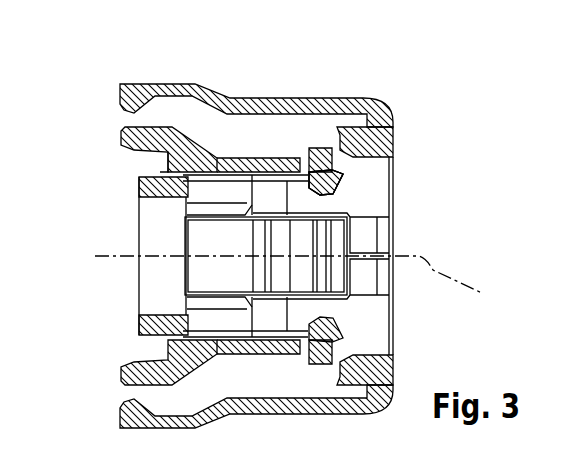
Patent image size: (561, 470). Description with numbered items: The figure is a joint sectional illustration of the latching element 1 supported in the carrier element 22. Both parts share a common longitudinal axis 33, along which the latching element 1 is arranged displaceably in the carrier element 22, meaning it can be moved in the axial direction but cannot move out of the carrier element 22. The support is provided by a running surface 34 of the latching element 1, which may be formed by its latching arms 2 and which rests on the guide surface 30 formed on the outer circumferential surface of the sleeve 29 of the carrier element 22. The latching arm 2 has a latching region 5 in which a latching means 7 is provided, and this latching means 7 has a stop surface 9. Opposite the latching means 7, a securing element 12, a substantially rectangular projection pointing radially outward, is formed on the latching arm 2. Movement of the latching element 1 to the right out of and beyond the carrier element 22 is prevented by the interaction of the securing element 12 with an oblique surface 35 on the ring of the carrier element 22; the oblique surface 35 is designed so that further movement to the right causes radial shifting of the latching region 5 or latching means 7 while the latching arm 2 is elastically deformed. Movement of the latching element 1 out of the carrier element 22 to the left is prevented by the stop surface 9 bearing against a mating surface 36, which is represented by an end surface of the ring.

The latching element 1 is at (223, 151).
The latching arm 2 is at (262, 158).
The latching region 5 is at (336, 189).
The latching means 7 is at (352, 178).
The stop surface 9 is at (310, 148).
The securing element 12 is at (330, 146).
The carrier element 22 is at (372, 88).
The sleeve 29 is at (138, 183).
The guide surface 30 is at (160, 172).
The common longitudinal axis 33 is at (303, 284).
The running surface 34 is at (284, 158).
The oblique surface 35 is at (352, 165).
The mating surface 36 is at (186, 212).